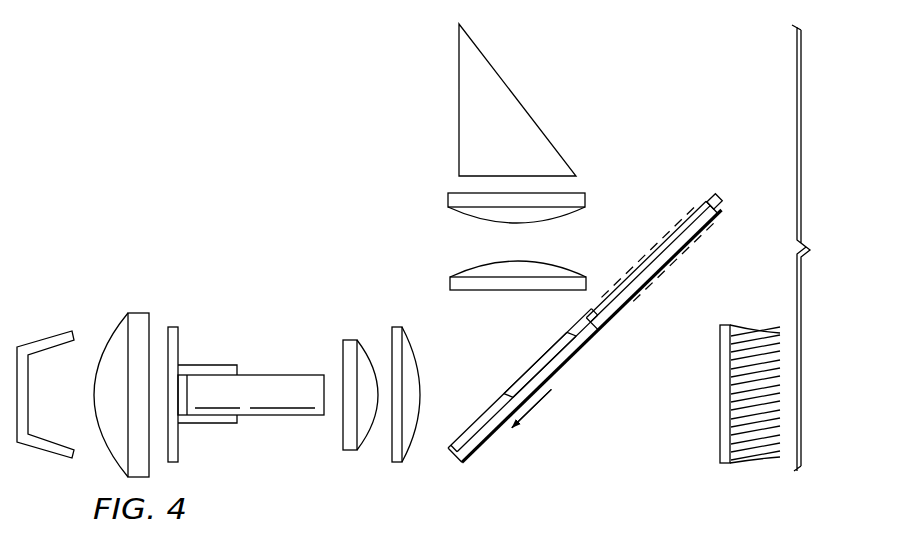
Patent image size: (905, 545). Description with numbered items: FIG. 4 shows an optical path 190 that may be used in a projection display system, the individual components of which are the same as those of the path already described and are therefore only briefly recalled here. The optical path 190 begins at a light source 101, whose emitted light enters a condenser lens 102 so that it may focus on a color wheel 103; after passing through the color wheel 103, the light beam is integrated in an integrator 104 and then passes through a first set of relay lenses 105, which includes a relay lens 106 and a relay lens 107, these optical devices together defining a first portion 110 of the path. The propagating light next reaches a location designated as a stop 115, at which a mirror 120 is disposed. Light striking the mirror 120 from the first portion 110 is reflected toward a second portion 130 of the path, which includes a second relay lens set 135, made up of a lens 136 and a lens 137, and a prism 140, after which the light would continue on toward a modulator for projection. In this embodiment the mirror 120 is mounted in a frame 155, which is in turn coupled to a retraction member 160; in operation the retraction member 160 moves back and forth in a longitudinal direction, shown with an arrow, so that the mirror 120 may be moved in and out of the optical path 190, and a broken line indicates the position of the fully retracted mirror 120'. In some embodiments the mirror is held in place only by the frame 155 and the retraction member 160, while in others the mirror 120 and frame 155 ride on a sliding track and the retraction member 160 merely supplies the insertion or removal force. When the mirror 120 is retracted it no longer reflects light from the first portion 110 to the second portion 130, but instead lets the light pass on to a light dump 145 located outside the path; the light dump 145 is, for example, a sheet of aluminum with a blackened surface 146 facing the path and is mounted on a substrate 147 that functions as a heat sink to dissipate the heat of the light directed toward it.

The light source 101 is at (47, 333).
The condenser lens 102 is at (138, 313).
The color wheel 103 is at (172, 327).
The integrator 104 is at (264, 375).
The first set of relay lenses 105 is at (370, 465).
The relay lens 106 is at (350, 340).
The relay lens 107 is at (397, 463).
The first portion 110 is at (264, 447).
The stop 115 is at (594, 441).
The mirror 120 is at (536, 353).
The retracted mirror 120' is at (652, 265).
The second portion 130 is at (670, 126).
The second relay lens set 135 is at (466, 239).
The lens 136 is at (449, 281).
The lens 137 is at (587, 202).
The prism 140 is at (459, 101).
The light dump 145 is at (725, 464).
The surface 146 is at (718, 395).
The substrate 147 is at (747, 325).
The frame 155 is at (481, 443).
The retraction member 160 is at (723, 201).
The optical path 190 is at (209, 157).